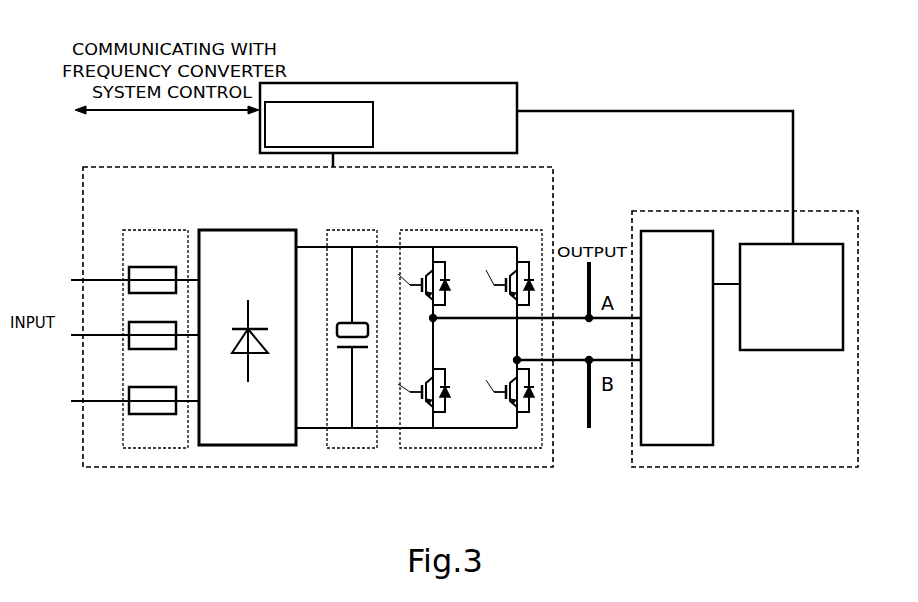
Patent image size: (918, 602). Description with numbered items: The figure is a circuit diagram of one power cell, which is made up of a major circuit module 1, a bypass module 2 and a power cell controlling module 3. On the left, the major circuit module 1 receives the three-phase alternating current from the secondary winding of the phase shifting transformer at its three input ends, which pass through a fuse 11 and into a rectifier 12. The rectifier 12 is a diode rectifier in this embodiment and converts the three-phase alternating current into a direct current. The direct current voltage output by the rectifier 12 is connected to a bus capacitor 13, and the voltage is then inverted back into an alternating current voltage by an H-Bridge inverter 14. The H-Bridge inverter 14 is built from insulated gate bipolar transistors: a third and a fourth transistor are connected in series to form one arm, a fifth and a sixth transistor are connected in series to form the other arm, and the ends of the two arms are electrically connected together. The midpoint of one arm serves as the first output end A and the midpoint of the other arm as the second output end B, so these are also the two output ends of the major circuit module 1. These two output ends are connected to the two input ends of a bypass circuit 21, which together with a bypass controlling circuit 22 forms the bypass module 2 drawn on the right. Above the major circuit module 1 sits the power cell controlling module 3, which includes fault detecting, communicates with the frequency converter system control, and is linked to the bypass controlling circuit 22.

The major circuit module 1 is at (92, 467).
The fuse 11 is at (150, 447).
The rectifier 12 is at (262, 445).
The bus capacitor 13 is at (333, 447).
The H-Bridge inverter 14 is at (410, 447).
The bypass module 2 is at (740, 467).
The bypass circuit 21 is at (675, 432).
The bypass controlling circuit 22 is at (810, 350).
The power cell controlling module 3 is at (405, 79).